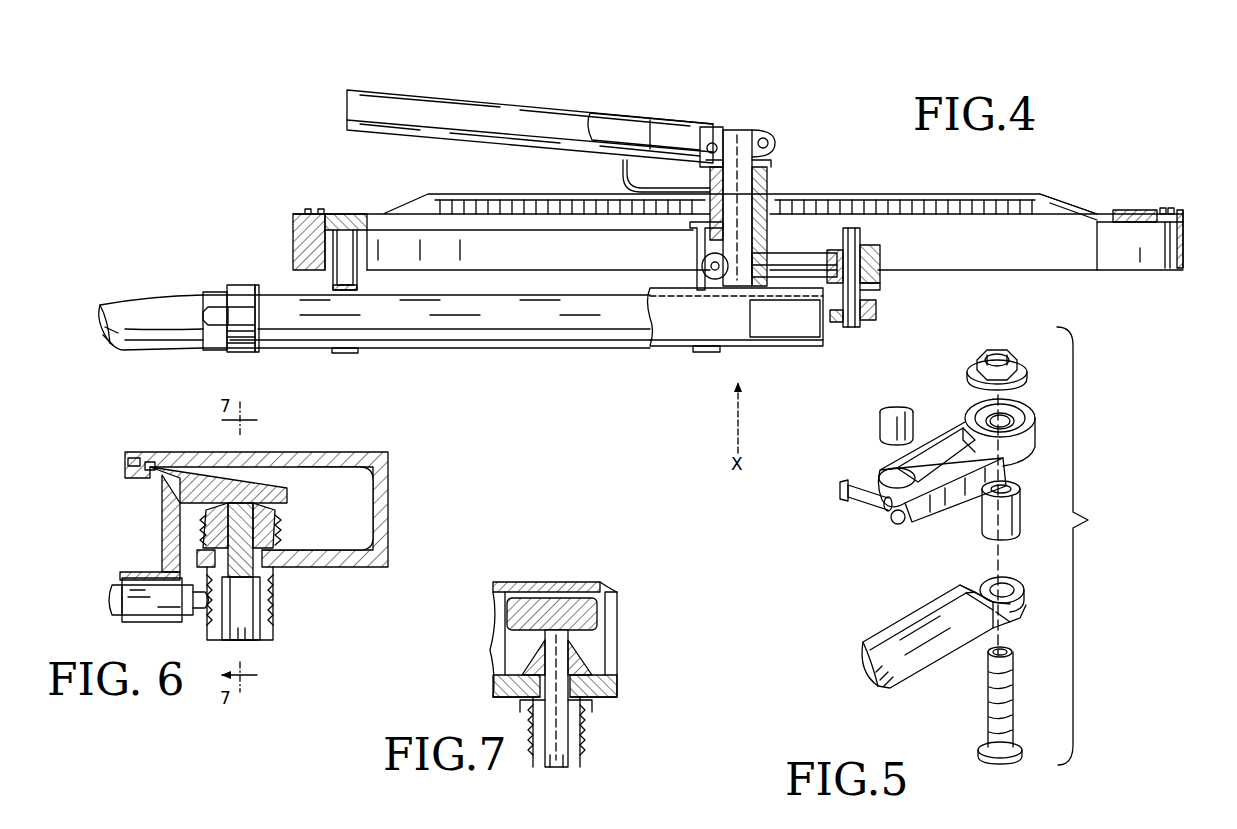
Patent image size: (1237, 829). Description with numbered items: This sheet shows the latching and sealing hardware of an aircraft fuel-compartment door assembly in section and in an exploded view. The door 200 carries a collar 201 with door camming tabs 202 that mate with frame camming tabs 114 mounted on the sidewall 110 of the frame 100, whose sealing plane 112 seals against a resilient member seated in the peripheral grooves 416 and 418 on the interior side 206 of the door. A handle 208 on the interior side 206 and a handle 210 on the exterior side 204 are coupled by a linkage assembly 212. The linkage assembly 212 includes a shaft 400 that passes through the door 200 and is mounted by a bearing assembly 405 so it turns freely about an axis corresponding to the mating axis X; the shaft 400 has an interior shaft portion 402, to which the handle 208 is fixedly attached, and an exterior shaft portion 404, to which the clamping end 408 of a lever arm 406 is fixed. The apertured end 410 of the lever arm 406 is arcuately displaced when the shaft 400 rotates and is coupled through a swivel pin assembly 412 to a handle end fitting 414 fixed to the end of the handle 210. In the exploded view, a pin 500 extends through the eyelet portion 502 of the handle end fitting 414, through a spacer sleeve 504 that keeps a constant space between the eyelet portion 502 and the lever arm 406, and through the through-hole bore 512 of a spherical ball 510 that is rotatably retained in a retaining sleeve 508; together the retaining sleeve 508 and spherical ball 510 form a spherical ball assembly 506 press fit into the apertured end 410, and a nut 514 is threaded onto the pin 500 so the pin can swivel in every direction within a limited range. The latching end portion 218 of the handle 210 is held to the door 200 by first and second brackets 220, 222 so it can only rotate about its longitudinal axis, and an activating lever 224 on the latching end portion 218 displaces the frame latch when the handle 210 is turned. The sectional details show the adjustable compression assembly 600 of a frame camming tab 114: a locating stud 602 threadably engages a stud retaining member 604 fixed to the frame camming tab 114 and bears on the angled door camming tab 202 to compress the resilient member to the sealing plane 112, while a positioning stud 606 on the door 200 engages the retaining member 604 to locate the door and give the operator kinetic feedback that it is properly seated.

In FIG. 6, the frame 100 is at (293, 518).
In FIG. 6, the sidewall 110 is at (372, 510).
In FIG. 6, the sealing plane 112 is at (287, 451).
In FIG. 6, the frame camming tab 114 is at (333, 568).
In FIG. 4, the door 200 is at (898, 173).
In FIG. 6, the door 200 is at (150, 527).
In FIG. 4, the collar 201 is at (1184, 246).
In FIG. 6, the door camming tab 202 is at (288, 488).
In FIG. 7, the door camming tab 202 is at (592, 610).
In FIG. 4, the exterior side 204 is at (1145, 270).
In FIG. 4, the interior side 206 is at (1120, 209).
In FIG. 4, the handle 208 is at (556, 104).
In FIG. 4, the handle 210 is at (283, 270).
In FIG. 4, the linkage assembly 212 is at (995, 258).
In FIG. 4, the latching end portion 218 is at (510, 349).
In FIG. 4, the first bracket 220 is at (703, 352).
In FIG. 4, the second bracket 222 is at (343, 353).
In FIG. 4, the activating lever 224 is at (238, 352).
In FIG. 4, the shaft 400 is at (783, 170).
In FIG. 4, the interior shaft portion 402 is at (751, 131).
In FIG. 4, the exterior shaft portion 404 is at (697, 243).
In FIG. 4, the bearing assembly 405 is at (770, 192).
In FIG. 4, the lever arm 406 is at (790, 253).
In FIG. 5, the lever arm 406 is at (927, 432).
In FIG. 4, the clamping end 408 is at (702, 269).
In FIG. 5, the clamping end 408 is at (870, 470).
In FIG. 4, the apertured end 410 is at (878, 252).
In FIG. 5, the apertured end 410 is at (1036, 372).
In FIG. 4, the swivel pin assembly 412 is at (880, 290).
In FIG. 4, the handle end fitting 414 is at (806, 347).
In FIG. 5, the handle end fitting 414 is at (913, 676).
In FIG. 4, the peripheral groove 416 is at (1175, 208).
In FIG. 6, the peripheral groove 416 is at (152, 463).
In FIG. 4, the peripheral groove 418 is at (1163, 207).
In FIG. 6, the peripheral groove 418 is at (133, 453).
In FIG. 5, the pin 500 is at (985, 757).
In FIG. 5, the eyelet portion 502 is at (1022, 608).
In FIG. 5, the spacer sleeve 504 is at (980, 525).
In FIG. 5, the spherical ball assembly 506 is at (1055, 457).
In FIG. 5, the retaining sleeve 508 is at (915, 420).
In FIG. 5, the spherical ball 510 is at (1037, 430).
In FIG. 5, the through-hole bore 512 is at (1010, 416).
In FIG. 5, the nut 514 is at (998, 350).
In FIG. 6, the adjustable compression assembly 600 is at (302, 633).
In FIG. 6, the locating stud 602 is at (247, 637).
In FIG. 7, the locating stud 602 is at (562, 767).
In FIG. 6, the stud retaining member 604 is at (208, 618).
In FIG. 6, the positioning stud 606 is at (110, 592).